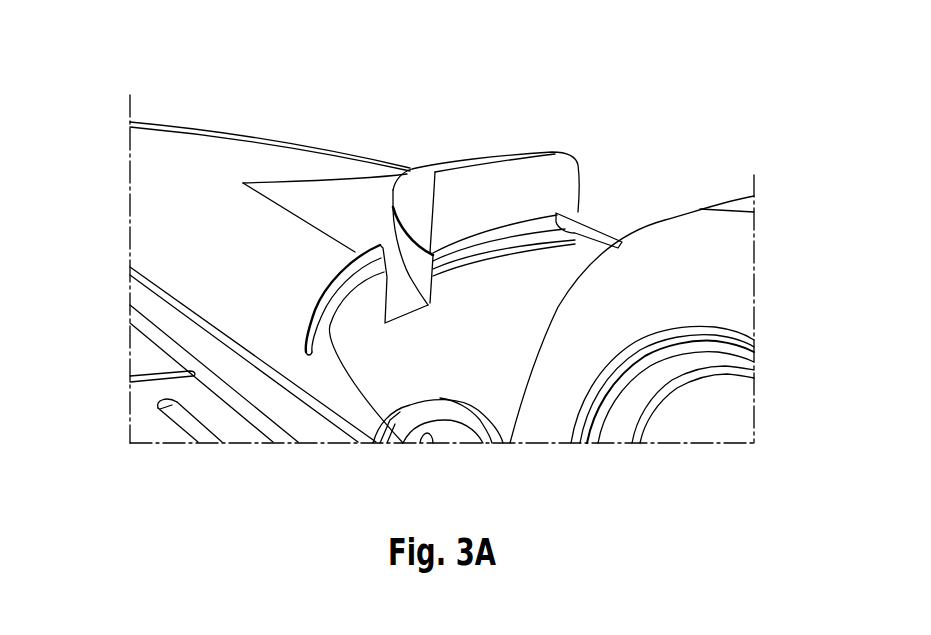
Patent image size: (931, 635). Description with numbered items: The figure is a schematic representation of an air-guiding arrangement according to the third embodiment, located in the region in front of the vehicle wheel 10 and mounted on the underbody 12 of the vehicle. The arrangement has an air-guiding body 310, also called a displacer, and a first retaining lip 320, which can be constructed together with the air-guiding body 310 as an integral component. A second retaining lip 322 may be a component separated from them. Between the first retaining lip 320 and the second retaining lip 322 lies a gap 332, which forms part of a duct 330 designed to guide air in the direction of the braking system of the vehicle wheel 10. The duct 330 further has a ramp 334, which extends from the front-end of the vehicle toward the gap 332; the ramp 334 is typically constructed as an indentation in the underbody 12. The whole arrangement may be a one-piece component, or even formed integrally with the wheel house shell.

The vehicle wheel 10 is at (730, 274).
The underbody 12 is at (167, 155).
The air-guiding body 310 is at (418, 182).
The first retaining lip 320 is at (553, 168).
The second retaining lip 322 is at (330, 277).
The duct 330 is at (363, 283).
The gap 332 is at (395, 283).
The ramp 334 is at (327, 198).